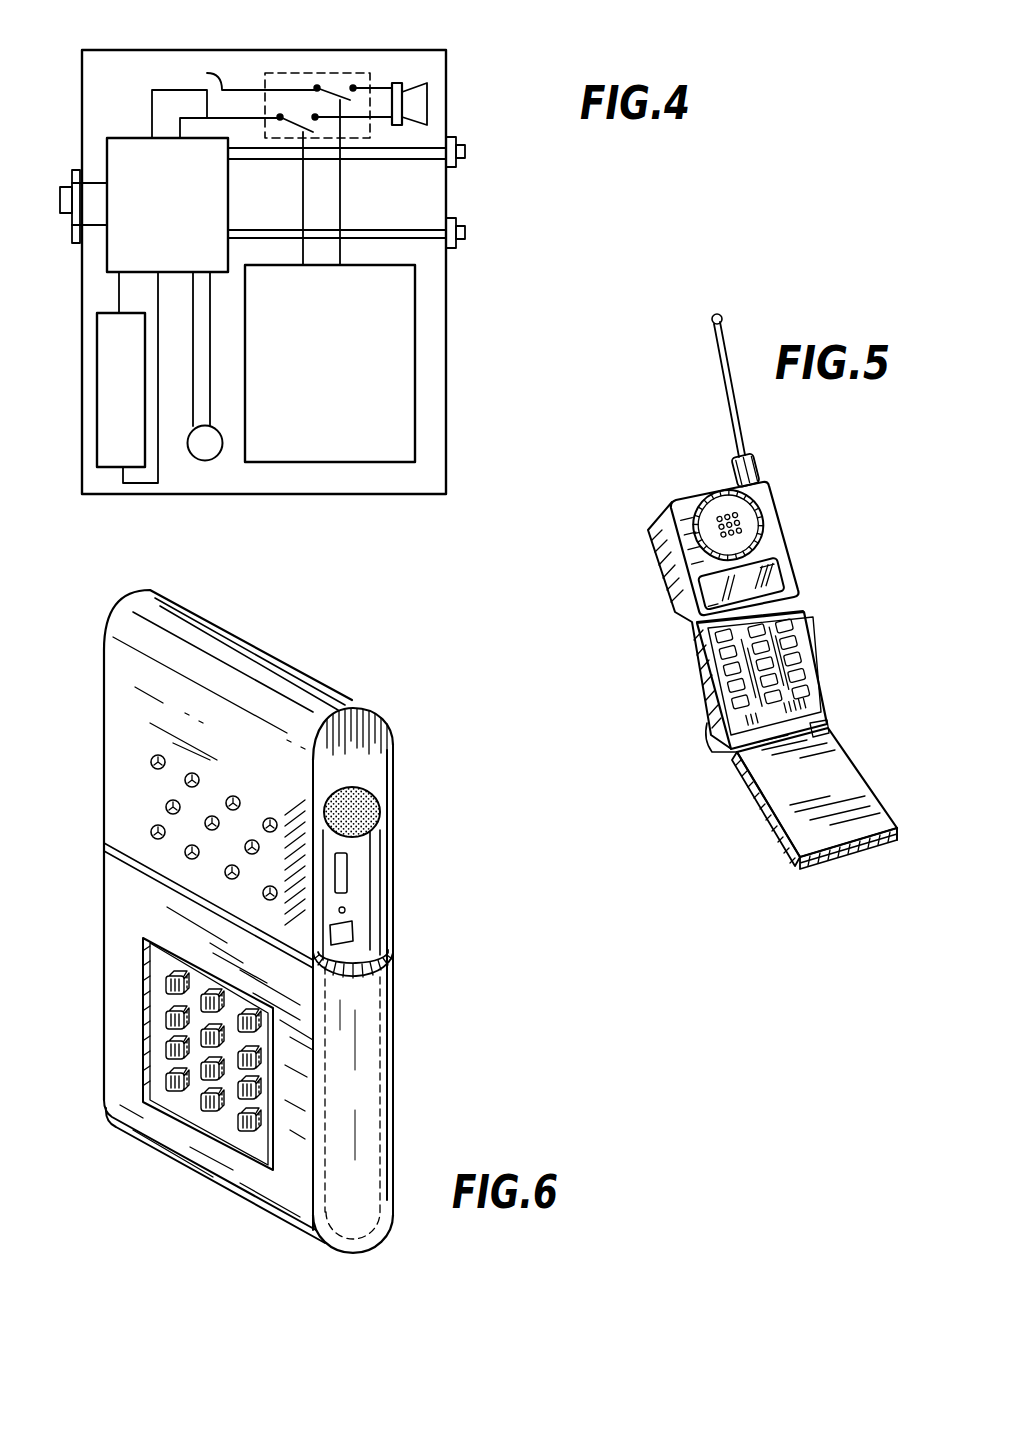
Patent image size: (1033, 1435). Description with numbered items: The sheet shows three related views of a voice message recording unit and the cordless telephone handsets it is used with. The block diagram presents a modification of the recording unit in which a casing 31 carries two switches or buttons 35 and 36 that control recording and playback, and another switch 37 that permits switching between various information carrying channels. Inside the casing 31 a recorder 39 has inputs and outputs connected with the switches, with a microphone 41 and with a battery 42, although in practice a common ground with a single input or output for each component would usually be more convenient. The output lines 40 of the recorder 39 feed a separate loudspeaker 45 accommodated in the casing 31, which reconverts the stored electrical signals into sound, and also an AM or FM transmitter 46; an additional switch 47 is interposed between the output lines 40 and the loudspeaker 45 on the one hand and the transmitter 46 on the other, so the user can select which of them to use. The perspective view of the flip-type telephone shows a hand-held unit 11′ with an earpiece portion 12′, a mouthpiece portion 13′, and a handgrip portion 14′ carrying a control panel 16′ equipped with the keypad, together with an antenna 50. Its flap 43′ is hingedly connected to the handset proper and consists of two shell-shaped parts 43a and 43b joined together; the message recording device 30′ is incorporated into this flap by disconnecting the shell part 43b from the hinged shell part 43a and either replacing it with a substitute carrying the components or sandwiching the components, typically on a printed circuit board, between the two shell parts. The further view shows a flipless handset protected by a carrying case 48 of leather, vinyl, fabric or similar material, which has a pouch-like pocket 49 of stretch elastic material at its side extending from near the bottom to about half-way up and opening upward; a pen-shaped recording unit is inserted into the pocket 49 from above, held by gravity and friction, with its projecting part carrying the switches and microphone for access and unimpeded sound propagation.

In FIG. 4, the casing 31 is at (447, 343).
In FIG. 4, the switch or button 35 is at (458, 165).
In FIG. 4, the switch or button 36 is at (458, 246).
In FIG. 4, the switch 37 is at (60, 200).
In FIG. 4, the recorder 39 is at (127, 158).
In FIG. 4, the output lines 40 is at (207, 73).
In FIG. 4, the microphone 41 is at (193, 453).
In FIG. 4, the battery 42 is at (103, 349).
In FIG. 4, the loudspeaker 45 is at (412, 100).
In FIG. 4, the FM transmitter 46 is at (398, 413).
In FIG. 4, the switch 47 is at (335, 72).
In FIG. 5, the hand-held unit 11′ is at (661, 481).
In FIG. 5, the earpiece portion 12′ is at (688, 507).
In FIG. 5, the mouthpiece portion 13′ is at (723, 727).
In FIG. 5, the handgrip portion 14′ is at (690, 623).
In FIG. 5, the control panel 16′ is at (750, 647).
In FIG. 5, the message recording device 30′ is at (890, 724).
In FIG. 5, the shell part 43a is at (810, 863).
In FIG. 5, the shell part 43b is at (738, 785).
In FIG. 5, the flap 43′ is at (872, 863).
In FIG. 5, the antenna 50 is at (730, 360).
In FIG. 6, the carrying case 48 is at (103, 794).
In FIG. 6, the pocket 49 is at (365, 1055).